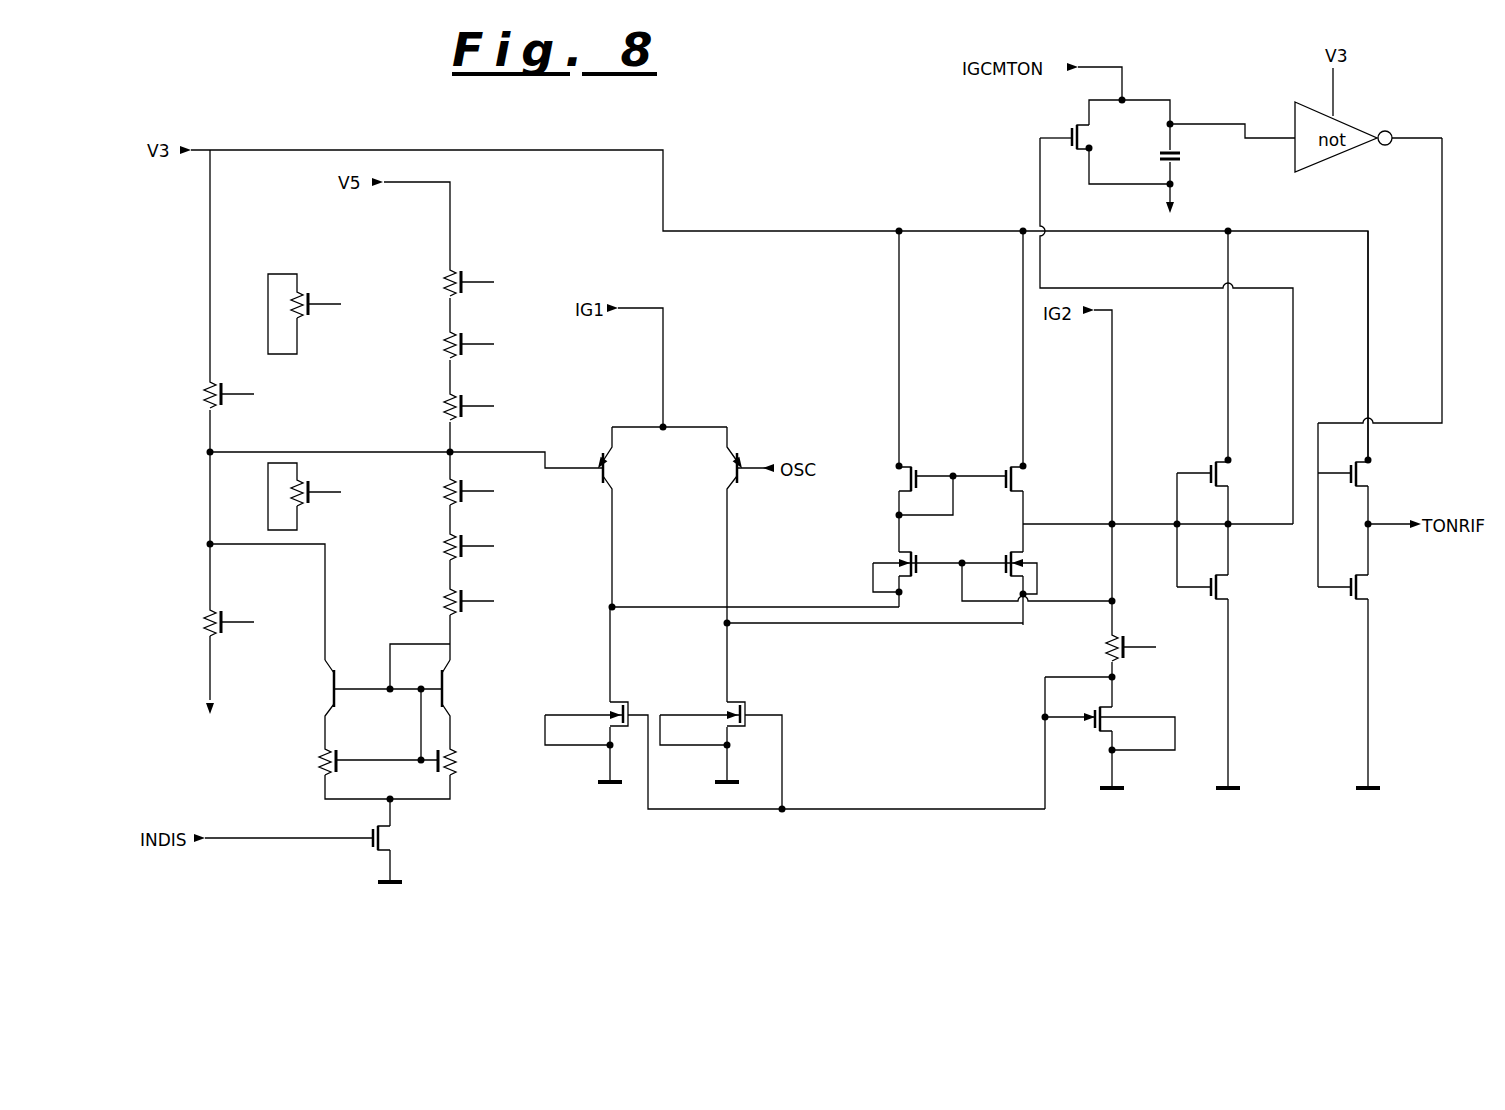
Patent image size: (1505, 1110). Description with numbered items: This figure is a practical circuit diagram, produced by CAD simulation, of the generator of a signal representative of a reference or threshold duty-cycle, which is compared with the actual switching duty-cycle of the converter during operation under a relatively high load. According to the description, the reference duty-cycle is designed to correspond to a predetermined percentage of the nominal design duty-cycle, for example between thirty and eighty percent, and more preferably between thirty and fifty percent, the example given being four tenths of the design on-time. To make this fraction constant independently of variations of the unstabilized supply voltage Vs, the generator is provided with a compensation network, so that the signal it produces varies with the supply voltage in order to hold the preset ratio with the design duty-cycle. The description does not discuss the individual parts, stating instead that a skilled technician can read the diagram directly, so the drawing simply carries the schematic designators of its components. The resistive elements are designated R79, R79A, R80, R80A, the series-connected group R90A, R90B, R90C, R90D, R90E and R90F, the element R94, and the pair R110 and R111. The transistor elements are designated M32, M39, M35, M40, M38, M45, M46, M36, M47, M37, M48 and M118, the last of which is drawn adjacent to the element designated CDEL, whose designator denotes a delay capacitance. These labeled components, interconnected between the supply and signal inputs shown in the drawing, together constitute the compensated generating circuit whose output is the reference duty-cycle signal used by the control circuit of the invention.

The resistor R79 is at (243, 407).
The resistor R79A is at (318, 314).
The resistor R80 is at (243, 634).
The resistor R80A is at (318, 497).
The resistor R90A is at (483, 294).
The resistor R90B is at (483, 356).
The resistor R90C is at (483, 418).
The resistor R90D is at (483, 503).
The resistor R90E is at (483, 558).
The resistor R90F is at (483, 613).
The resistor R94 is at (1145, 670).
The resistor R110 is at (346, 750).
The resistor R111 is at (468, 750).
The transistor M32 is at (795, 710).
The transistor M39 is at (721, 716).
The transistor M35 is at (951, 391).
The transistor M40 is at (1003, 391).
The transistor M38 is at (939, 565).
The transistor M45 is at (1008, 574).
The transistor M46 is at (1110, 736).
The transistor M36 is at (1204, 409).
The transistor M47 is at (1208, 668).
The transistor M37 is at (1380, 362).
The transistor M48 is at (1349, 668).
The transistor M118 is at (1066, 127).
The delay capacitor CDEL is at (1134, 156).